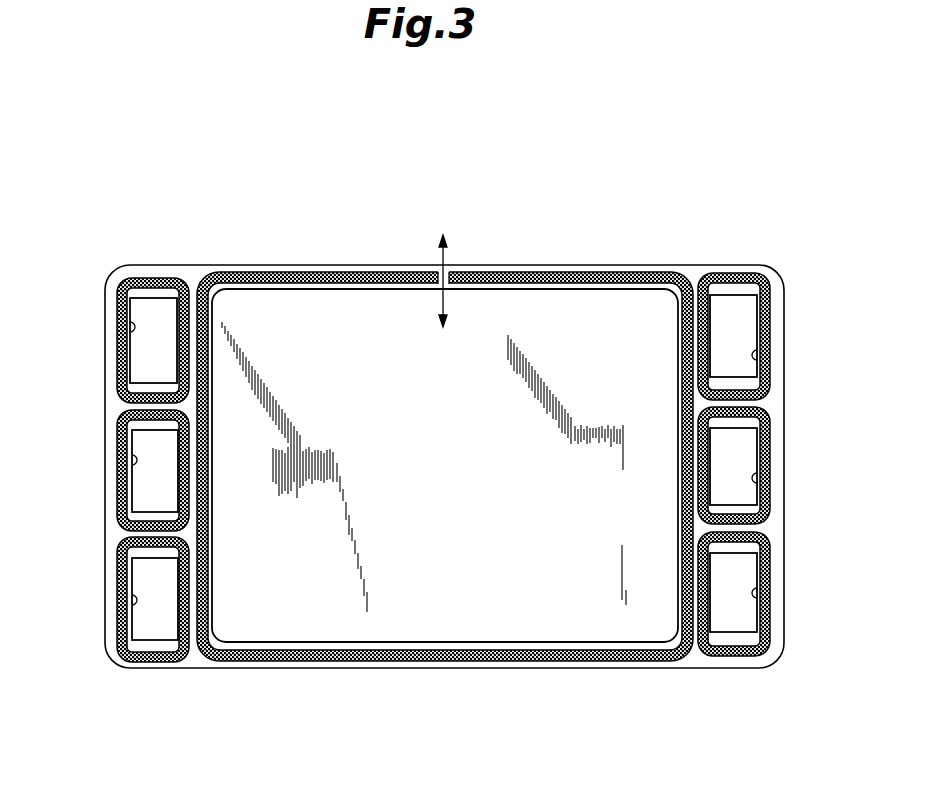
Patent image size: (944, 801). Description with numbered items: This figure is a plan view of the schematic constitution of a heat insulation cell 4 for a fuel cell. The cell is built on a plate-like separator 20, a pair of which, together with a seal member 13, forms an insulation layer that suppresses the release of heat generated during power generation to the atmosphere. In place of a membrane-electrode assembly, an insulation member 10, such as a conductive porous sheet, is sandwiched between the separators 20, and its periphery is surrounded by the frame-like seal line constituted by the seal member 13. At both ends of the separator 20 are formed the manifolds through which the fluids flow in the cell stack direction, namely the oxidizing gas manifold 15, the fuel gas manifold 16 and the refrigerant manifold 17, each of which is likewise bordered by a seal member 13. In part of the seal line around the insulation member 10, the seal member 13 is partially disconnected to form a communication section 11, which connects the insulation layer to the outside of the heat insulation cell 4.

The heat insulation cell 4 is at (160, 178).
The insulation member 10 is at (555, 612).
The communication section 11 is at (450, 270).
The seal member 13 is at (122, 283).
The oxidizing gas manifold 15 is at (130, 600).
The fuel gas manifold 16 is at (133, 327).
The refrigerant manifold 17 is at (133, 460).
The separator 20 is at (698, 662).